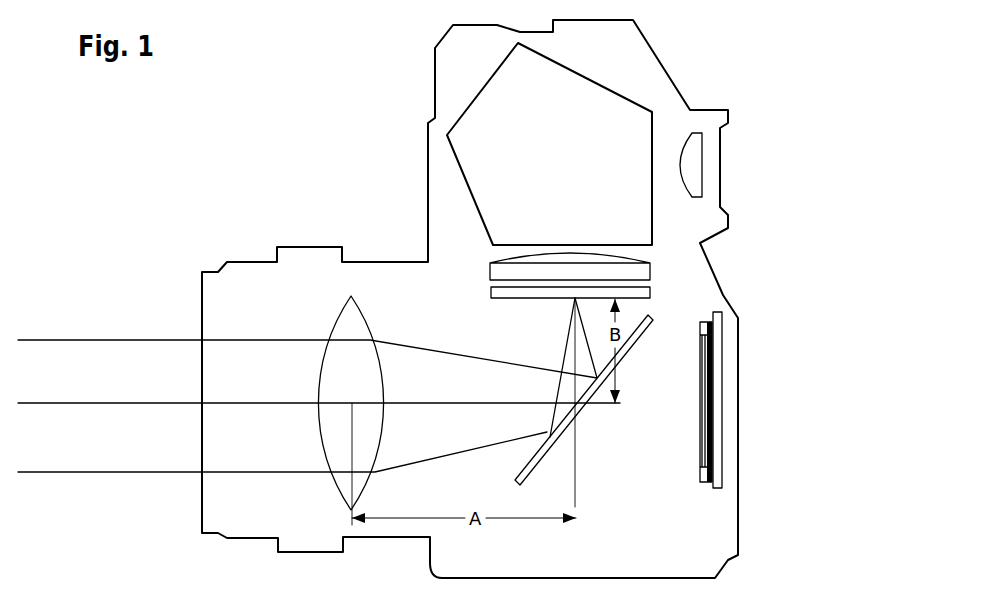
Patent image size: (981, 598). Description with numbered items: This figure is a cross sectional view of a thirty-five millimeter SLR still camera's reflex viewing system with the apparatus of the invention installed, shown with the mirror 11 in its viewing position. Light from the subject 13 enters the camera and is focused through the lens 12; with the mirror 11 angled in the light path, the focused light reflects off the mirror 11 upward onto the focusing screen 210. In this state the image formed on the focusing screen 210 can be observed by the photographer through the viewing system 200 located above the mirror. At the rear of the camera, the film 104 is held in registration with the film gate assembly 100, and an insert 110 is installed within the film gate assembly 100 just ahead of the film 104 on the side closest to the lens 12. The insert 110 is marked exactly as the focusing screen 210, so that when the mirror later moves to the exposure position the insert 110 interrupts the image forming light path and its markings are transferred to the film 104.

The mirror 11 is at (562, 417).
The lens 12 is at (352, 382).
The subject 13 is at (52, 472).
The film gate assembly 100 is at (729, 388).
The film 104 is at (704, 403).
The insert 110 is at (702, 367).
The viewing system 200 is at (675, 248).
The focusing screen 210 is at (487, 287).